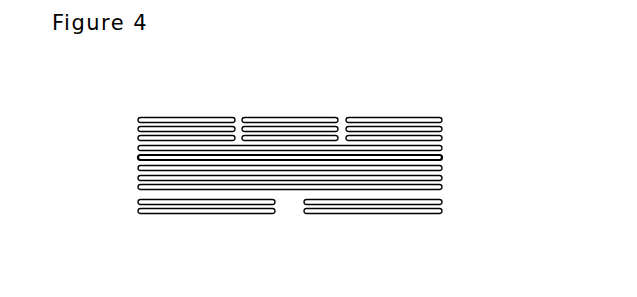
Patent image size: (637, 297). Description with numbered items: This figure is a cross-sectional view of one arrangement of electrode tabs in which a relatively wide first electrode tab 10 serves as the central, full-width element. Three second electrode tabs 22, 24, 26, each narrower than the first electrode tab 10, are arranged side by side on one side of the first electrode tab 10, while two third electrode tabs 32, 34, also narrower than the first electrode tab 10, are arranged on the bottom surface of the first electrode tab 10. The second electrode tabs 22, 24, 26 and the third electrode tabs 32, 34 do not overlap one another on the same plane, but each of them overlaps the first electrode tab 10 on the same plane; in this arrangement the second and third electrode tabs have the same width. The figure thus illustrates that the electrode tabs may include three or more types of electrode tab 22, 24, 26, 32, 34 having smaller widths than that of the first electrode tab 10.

The first electrode tab 10 is at (441, 187).
The second electrode tab 22 is at (190, 114).
The second electrode tab 24 is at (293, 114).
The second electrode tab 26 is at (397, 114).
The third electrode tab 32 is at (203, 217).
The third electrode tab 34 is at (383, 217).